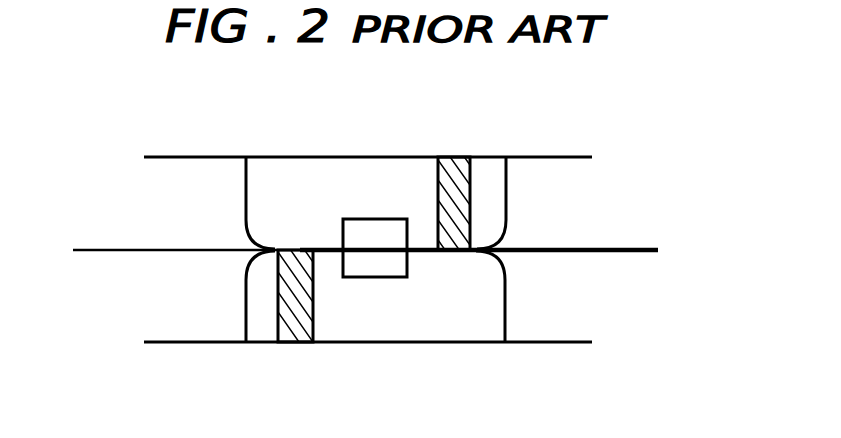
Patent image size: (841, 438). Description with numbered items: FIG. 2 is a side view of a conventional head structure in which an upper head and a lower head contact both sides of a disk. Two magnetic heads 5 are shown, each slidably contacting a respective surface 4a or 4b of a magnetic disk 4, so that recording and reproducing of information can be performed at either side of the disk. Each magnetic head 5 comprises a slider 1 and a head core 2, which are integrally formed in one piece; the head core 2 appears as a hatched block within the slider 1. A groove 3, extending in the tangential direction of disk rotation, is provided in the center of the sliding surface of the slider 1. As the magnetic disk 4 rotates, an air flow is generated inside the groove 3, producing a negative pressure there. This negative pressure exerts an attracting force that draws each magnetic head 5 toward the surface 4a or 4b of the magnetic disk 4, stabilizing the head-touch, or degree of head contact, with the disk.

The slider 1 is at (506, 195).
The head core 2 is at (457, 158).
The groove 3 is at (403, 227).
The magnetic disk 4 is at (110, 249).
The surface of magnetic disk 4a is at (598, 249).
The surface of magnetic disk 4b is at (598, 251).
The magnetic head 5 is at (315, 166).